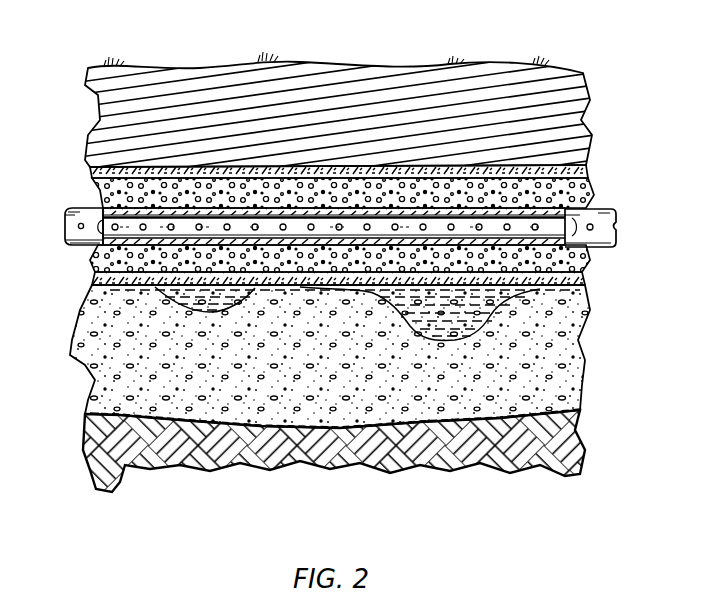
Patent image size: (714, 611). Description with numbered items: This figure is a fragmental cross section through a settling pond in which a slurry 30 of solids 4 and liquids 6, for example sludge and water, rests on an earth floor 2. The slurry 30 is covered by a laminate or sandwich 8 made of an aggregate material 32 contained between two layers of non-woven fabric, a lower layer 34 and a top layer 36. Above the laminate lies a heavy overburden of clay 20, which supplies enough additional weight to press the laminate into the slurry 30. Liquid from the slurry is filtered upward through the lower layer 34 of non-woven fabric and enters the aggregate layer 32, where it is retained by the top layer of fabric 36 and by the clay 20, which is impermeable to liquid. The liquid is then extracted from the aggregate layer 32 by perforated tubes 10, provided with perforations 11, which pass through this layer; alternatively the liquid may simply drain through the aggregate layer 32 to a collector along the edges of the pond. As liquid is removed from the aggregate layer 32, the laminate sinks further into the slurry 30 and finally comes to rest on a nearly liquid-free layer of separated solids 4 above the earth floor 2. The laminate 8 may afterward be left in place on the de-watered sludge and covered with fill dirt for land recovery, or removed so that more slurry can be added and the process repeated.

The earth floor 2 is at (475, 462).
The solids 4 is at (314, 347).
The liquids 6 is at (443, 316).
The laminate or sandwich 8 is at (605, 193).
The perforated tubes 10 is at (72, 245).
The perforations 11 is at (65, 222).
The clay 20 is at (300, 108).
The slurry 30 is at (583, 350).
The aggregate material 32 is at (585, 258).
The lower layer of non-woven fabric 34 is at (92, 280).
The top layer of fabric 36 is at (90, 173).